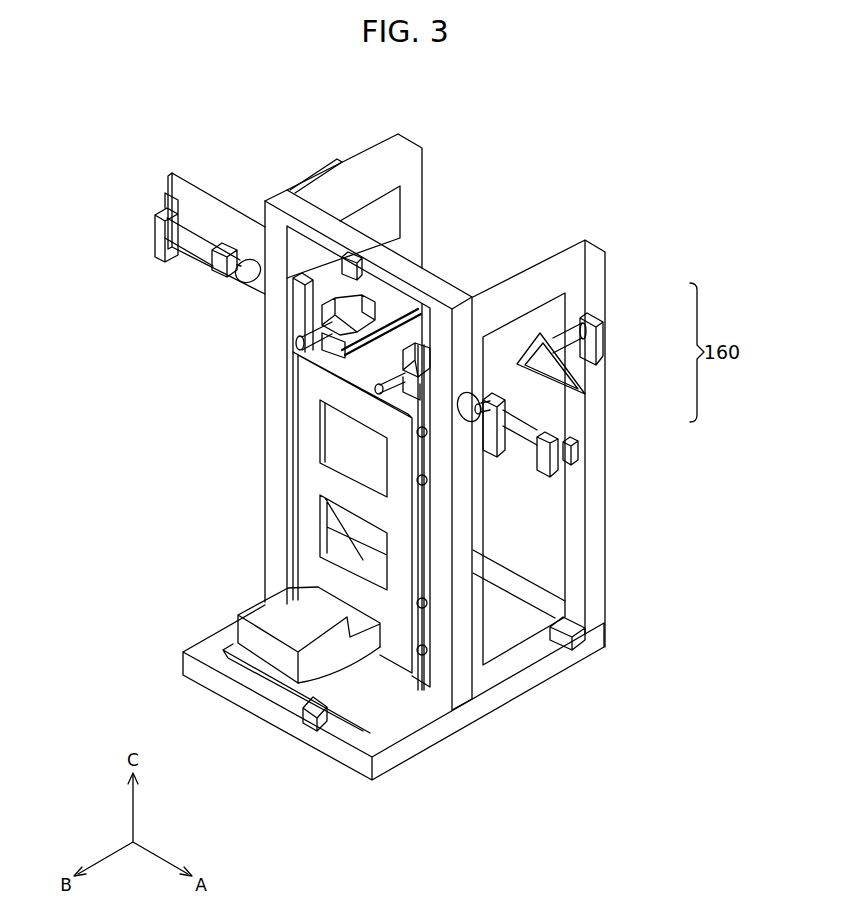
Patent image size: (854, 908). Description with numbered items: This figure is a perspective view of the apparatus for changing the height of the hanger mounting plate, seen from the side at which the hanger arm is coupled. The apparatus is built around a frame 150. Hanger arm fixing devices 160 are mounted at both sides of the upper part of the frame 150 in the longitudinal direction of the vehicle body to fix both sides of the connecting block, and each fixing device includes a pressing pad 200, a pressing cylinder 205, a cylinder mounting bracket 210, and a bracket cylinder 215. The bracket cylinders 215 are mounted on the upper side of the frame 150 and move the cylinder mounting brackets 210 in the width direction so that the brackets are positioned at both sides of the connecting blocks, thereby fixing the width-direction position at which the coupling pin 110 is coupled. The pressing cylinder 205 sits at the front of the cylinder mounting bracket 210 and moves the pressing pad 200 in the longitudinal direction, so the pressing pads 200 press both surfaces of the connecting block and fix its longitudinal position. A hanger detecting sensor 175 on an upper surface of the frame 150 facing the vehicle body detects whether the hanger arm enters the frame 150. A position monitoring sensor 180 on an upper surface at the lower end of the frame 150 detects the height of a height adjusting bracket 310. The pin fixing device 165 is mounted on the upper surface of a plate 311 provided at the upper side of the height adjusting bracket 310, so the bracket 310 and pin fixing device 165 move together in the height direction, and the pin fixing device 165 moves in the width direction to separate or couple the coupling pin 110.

The coupling pin 110 is at (299, 338).
The frame 150 is at (598, 550).
The hanger arm fixing device 160 is at (143, 197).
The pin fixing device 165 is at (306, 314).
The hanger detecting sensor 175 is at (352, 257).
The position monitoring sensor 180 is at (308, 718).
The pressing pad 200 is at (468, 392).
The pressing cylinder 205 is at (530, 434).
The cylinder mounting bracket 210 is at (574, 432).
The bracket cylinder 215 is at (588, 346).
The height adjusting bracket 310 is at (279, 653).
The plate 311 is at (343, 368).